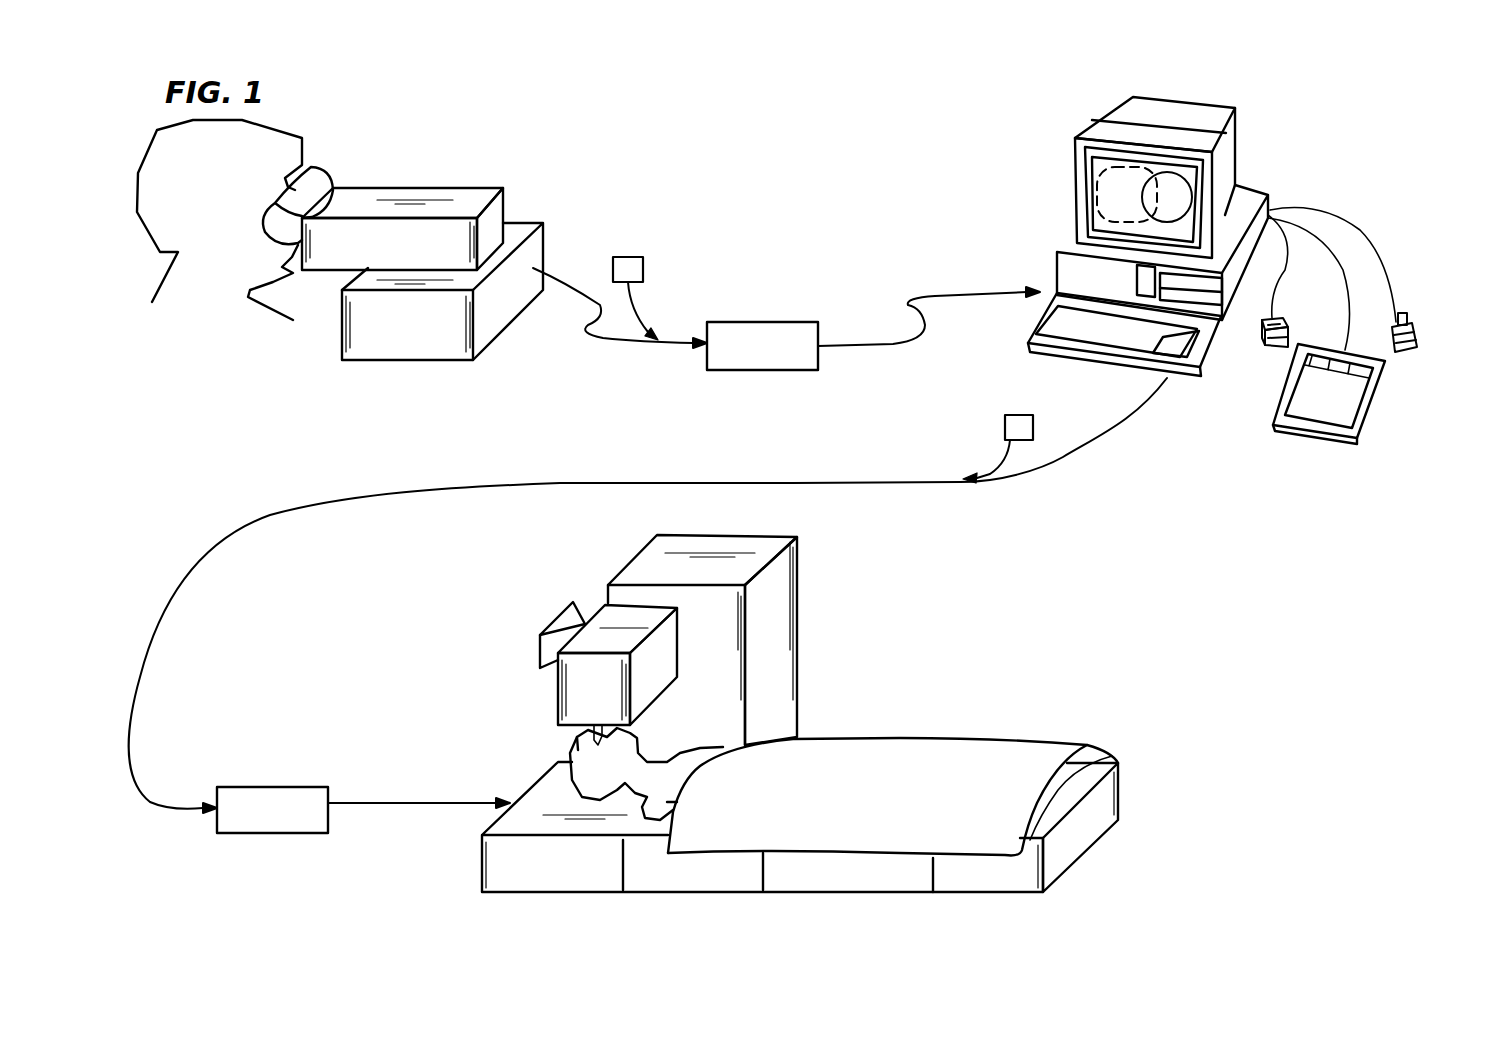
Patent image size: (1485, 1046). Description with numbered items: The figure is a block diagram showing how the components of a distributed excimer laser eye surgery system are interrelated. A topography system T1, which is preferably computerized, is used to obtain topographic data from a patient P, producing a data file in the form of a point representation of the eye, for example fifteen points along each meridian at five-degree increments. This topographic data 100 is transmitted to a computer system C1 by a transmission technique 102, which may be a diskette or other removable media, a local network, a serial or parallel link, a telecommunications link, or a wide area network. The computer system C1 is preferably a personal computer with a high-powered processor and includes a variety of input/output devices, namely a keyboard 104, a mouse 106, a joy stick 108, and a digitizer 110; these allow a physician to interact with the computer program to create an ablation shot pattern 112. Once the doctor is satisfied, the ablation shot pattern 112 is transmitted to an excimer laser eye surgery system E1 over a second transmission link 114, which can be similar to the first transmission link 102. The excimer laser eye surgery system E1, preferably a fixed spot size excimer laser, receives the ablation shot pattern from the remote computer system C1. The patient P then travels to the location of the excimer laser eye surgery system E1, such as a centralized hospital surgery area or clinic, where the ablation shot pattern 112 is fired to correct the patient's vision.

The patient P is at (268, 137).
The topography system T1 is at (482, 193).
The topographic data 100 is at (630, 262).
The transmission link 102 is at (767, 332).
The computer system C1 is at (1230, 142).
The keyboard 104 is at (1040, 332).
The mouse 106 is at (1265, 337).
The joy stick 108 is at (1415, 352).
The digitizer 110 is at (1322, 420).
The ablation shot pattern 112 is at (1013, 427).
The second transmission link 114 is at (296, 826).
The excimer laser eye surgery system E1 is at (790, 590).